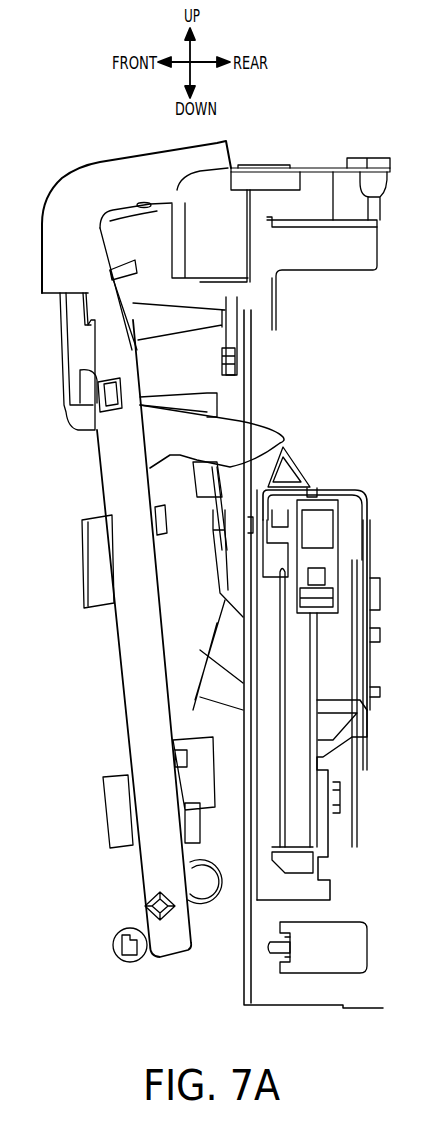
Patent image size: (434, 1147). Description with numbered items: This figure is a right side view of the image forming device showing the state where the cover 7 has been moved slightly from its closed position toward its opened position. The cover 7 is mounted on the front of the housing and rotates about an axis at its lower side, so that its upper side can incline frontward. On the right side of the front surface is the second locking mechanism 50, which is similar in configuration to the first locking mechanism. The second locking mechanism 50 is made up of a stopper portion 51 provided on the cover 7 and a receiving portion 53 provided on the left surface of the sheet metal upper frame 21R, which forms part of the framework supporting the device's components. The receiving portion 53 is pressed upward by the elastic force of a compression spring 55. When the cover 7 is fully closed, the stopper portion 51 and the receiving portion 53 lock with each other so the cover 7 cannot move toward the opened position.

The cover 7 is at (42, 204).
The second locking mechanism 50 is at (264, 446).
The stopper portion 51 is at (283, 432).
The receiving portion 53 is at (297, 470).
The compression spring 55 is at (352, 527).
The upper frame 21R is at (291, 1000).